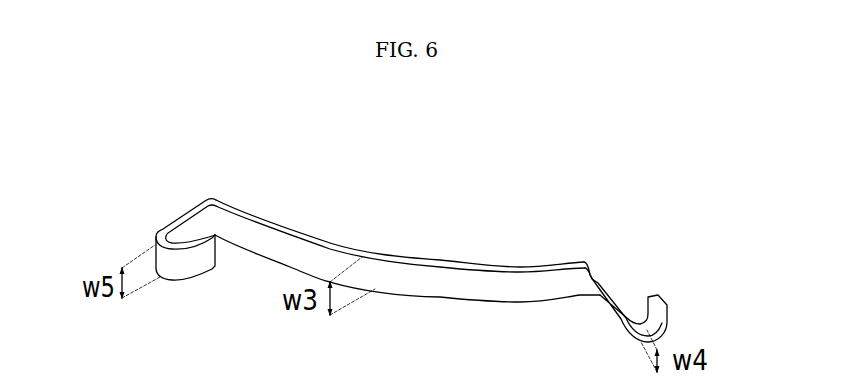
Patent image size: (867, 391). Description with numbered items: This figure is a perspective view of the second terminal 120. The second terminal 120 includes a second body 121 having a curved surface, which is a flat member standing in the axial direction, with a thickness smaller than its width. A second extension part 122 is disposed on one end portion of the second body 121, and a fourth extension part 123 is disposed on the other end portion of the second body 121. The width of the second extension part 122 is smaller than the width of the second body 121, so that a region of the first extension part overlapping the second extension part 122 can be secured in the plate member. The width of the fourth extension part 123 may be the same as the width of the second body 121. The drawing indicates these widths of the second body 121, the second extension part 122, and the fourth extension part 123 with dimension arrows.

The second terminal 120 is at (120, 163).
The second body 121 is at (407, 286).
The second extension part 122 is at (662, 327).
The fourth extension part 123 is at (182, 217).